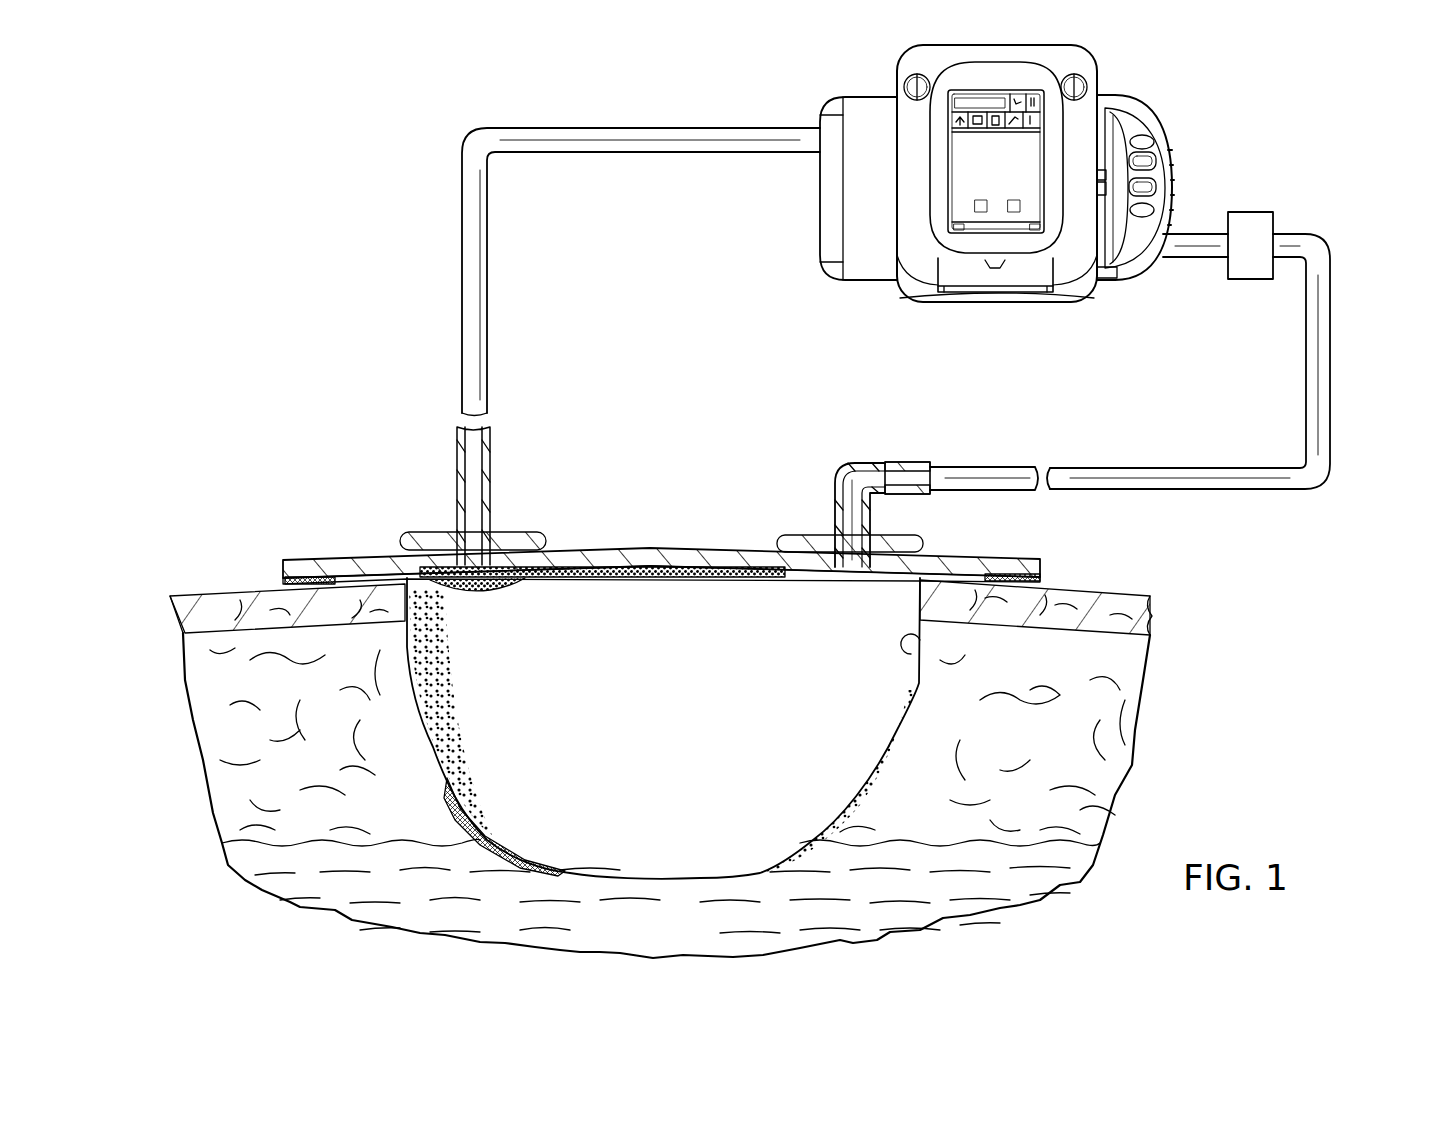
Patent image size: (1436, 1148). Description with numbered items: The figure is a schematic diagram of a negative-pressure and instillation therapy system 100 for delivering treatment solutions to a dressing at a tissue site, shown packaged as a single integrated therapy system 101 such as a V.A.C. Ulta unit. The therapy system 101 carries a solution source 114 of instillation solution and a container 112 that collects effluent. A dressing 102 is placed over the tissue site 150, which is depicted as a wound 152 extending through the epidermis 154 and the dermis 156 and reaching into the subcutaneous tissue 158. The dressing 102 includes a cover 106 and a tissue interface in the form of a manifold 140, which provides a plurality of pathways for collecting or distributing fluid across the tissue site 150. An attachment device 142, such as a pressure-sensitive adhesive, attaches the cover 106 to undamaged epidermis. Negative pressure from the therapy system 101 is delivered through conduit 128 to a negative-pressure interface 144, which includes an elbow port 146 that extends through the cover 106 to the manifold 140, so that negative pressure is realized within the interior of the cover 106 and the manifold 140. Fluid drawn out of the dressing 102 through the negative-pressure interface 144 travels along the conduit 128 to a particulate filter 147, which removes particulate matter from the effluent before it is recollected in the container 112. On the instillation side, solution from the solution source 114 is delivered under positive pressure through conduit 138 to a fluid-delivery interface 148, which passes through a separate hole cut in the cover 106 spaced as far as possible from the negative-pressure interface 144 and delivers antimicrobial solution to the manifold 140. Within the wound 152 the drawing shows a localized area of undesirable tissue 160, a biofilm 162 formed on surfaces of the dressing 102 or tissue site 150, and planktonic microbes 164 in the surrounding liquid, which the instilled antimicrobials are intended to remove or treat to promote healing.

The therapy system 100 is at (364, 176).
The therapy system 101 is at (1102, 89).
The dressing 102 is at (647, 545).
The cover 106 is at (398, 538).
The container 112 is at (1168, 141).
The solution source 114 is at (868, 105).
The conduit 128 is at (1190, 232).
The conduit 138 is at (658, 127).
The manifold 140 is at (680, 723).
The attachment device 142 is at (280, 577).
The negative-pressure interface 144 is at (829, 493).
The elbow port 146 is at (918, 460).
The particulate filter 147 is at (1253, 212).
The fluid-delivery interface 148 is at (452, 474).
The tissue site 150 is at (876, 788).
The wound 152 is at (928, 662).
The epidermis 154 is at (1110, 590).
The dermis 156 is at (1052, 749).
The subcutaneous tissue 158 is at (680, 932).
The undesirable tissue 160 is at (445, 798).
The biofilm 162 is at (668, 578).
The planktonic microbes 164 is at (484, 590).